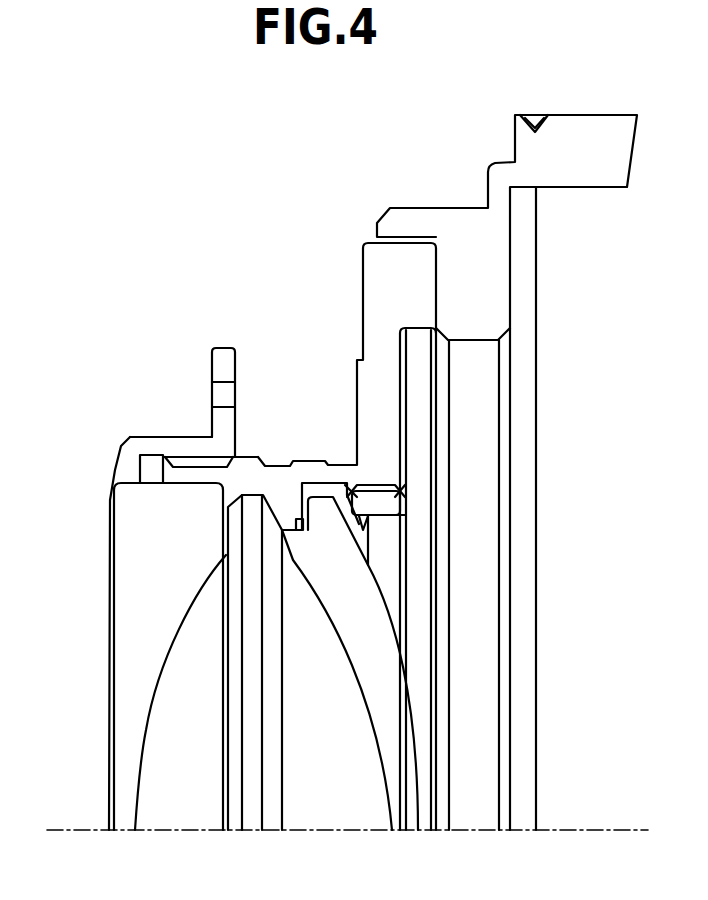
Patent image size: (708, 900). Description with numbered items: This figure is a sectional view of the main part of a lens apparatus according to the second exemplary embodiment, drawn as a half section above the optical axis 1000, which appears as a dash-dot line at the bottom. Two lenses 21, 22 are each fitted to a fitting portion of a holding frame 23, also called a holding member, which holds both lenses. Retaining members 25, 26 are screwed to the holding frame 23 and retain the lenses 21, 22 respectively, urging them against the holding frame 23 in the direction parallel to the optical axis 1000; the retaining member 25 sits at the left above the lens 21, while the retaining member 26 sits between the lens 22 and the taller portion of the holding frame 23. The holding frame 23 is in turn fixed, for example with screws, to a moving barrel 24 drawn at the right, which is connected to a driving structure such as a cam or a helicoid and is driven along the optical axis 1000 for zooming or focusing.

The optical axis 1000 is at (68, 830).
The lens 21 is at (130, 617).
The lens 22 is at (343, 603).
The holding frame 23 is at (362, 410).
The moving barrel 24 is at (478, 250).
The retaining member 25 is at (183, 452).
The retaining member 26 is at (370, 517).